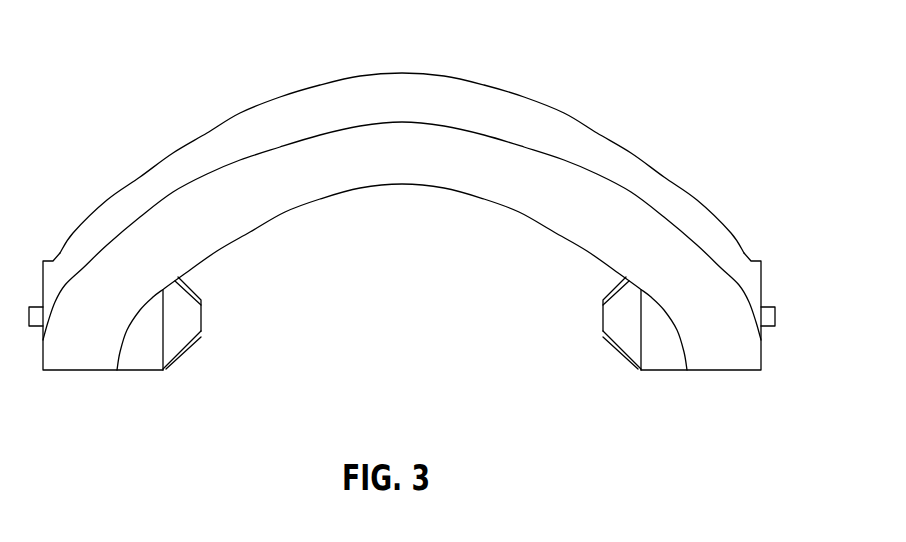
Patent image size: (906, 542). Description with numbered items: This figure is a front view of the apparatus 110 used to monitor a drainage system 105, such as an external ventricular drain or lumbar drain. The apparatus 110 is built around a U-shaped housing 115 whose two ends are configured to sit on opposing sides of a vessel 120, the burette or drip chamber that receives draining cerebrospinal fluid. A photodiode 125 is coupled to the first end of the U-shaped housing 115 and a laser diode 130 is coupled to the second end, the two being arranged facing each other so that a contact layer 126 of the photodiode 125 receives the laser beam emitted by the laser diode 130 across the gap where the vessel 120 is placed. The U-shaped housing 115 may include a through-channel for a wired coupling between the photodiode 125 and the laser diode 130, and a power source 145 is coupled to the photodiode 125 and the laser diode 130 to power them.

The apparatus 110 is at (402, 224).
The power source 145 is at (403, 73).
The drainage system 105 is at (715, 370).
The laser diode 130 is at (228, 332).
The U-shaped housing 115 is at (182, 350).
The photodiode 125 is at (543, 332).
The contact layer 126 is at (616, 304).
The vessel 120 is at (620, 352).